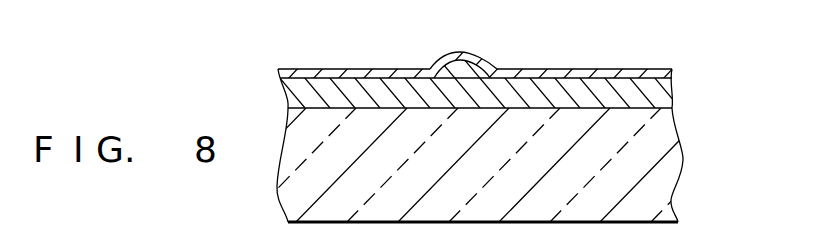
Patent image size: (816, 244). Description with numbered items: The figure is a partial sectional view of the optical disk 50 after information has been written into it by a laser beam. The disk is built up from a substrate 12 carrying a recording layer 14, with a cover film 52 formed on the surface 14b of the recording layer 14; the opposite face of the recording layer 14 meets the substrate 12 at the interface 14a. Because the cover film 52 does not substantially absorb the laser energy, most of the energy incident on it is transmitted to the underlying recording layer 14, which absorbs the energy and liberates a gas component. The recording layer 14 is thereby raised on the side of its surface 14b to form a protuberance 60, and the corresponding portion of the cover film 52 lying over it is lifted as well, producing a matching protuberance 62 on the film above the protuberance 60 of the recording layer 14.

The substrate 12 is at (670, 205).
The recording layer 14 is at (675, 86).
The interface 14a is at (672, 118).
The surface of recording layer 14b is at (677, 75).
The optical disk 50 is at (684, 158).
The cover film 52 is at (671, 70).
The protuberance 60 is at (462, 73).
The protuberance 62 is at (488, 63).